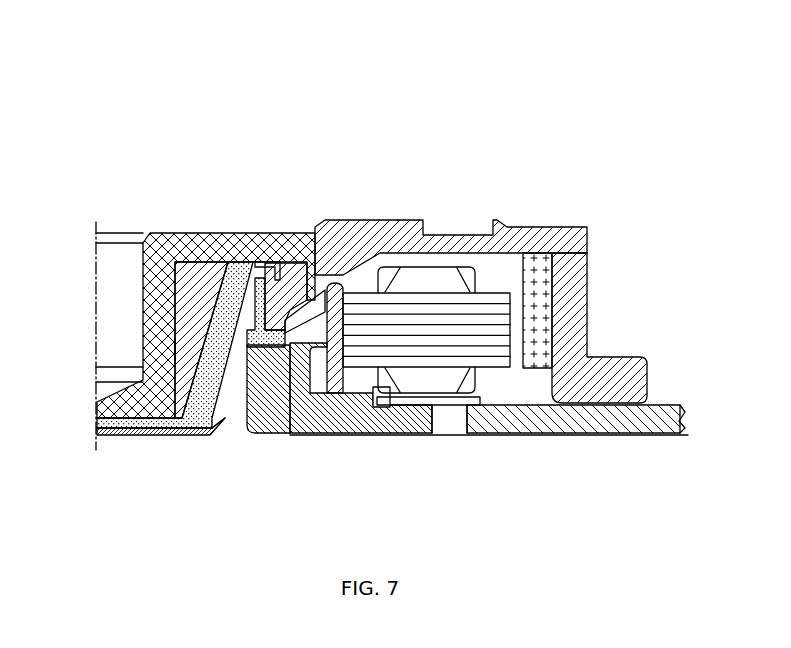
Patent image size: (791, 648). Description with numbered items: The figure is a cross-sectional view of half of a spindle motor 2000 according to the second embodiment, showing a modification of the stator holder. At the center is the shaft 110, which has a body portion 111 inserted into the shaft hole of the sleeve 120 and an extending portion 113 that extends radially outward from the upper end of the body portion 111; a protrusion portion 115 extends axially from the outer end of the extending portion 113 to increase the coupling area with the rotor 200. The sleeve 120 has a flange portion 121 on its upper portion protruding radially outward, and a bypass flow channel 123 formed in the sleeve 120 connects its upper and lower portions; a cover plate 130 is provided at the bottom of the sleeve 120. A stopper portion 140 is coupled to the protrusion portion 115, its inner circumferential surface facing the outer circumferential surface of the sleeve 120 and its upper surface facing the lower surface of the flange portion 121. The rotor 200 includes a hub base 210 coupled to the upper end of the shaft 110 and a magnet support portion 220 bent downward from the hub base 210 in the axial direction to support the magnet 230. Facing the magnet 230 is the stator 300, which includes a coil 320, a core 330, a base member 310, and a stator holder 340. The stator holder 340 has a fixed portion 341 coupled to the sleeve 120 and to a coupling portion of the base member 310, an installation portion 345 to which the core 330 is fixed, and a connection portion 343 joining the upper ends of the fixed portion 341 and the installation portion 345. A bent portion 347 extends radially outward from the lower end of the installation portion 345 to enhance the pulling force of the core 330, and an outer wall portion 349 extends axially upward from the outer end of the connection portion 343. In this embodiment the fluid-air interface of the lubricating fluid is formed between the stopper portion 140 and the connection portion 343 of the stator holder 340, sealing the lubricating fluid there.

The spindle motor 2000 is at (528, 28).
The shaft 110 is at (127, 75).
The body portion 111 is at (143, 240).
The extending portion 113 is at (200, 262).
The protrusion portion 115 is at (325, 222).
The sleeve 120 is at (191, 326).
The flange portion 121 is at (247, 262).
The bypass flow channel 123 is at (208, 432).
The cover plate 130 is at (118, 435).
The stopper portion 140 is at (290, 262).
The outer wall portion 349 is at (193, 353).
The rotor 200 is at (588, 200).
The hub base 210 is at (398, 220).
The magnet support portion 220 is at (585, 270).
The magnet 230 is at (537, 318).
The stator 300 is at (590, 500).
The base member 310 is at (560, 415).
The coil 320 is at (490, 400).
The core 330 is at (437, 347).
The stator holder 340 is at (253, 500).
The fixed portion 341 is at (282, 405).
The connection portion 343 is at (313, 395).
The installation portion 345 is at (318, 360).
The bent portion 347 is at (390, 420).